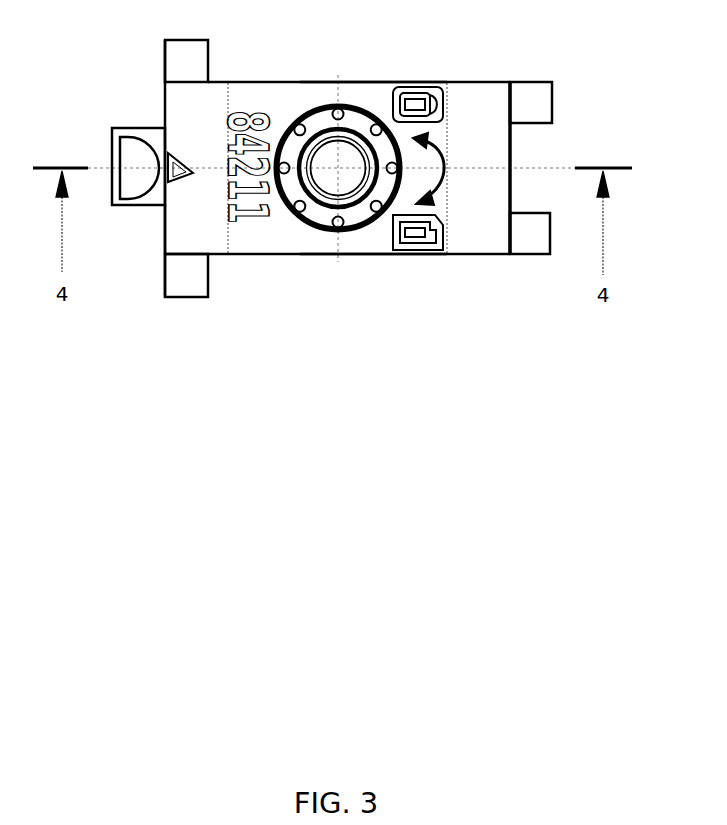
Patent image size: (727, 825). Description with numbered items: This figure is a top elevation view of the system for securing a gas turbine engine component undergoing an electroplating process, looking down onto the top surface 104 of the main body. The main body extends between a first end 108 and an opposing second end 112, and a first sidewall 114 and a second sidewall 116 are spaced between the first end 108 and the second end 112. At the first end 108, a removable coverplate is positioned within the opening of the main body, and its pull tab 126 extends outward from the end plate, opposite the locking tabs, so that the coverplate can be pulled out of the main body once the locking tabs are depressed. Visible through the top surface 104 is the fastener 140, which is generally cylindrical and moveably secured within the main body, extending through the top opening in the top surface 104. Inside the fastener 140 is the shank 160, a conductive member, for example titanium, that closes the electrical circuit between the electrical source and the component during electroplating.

The top surface 104 is at (298, 92).
The first end 108 is at (165, 240).
The second end 112 is at (512, 135).
The first sidewall 114 is at (378, 268).
The second sidewall 116 is at (378, 74).
The pull tab 126 is at (122, 132).
The fastener 140 is at (312, 217).
The shank 160 is at (348, 180).